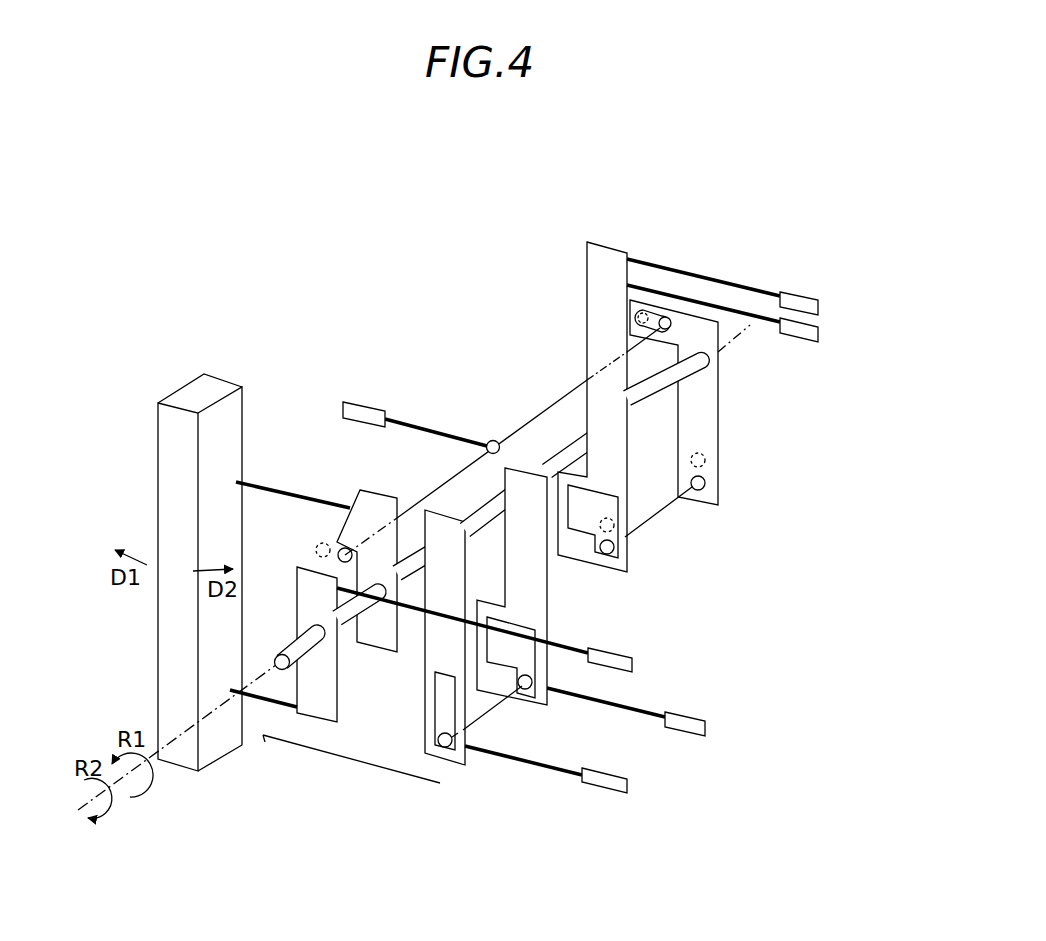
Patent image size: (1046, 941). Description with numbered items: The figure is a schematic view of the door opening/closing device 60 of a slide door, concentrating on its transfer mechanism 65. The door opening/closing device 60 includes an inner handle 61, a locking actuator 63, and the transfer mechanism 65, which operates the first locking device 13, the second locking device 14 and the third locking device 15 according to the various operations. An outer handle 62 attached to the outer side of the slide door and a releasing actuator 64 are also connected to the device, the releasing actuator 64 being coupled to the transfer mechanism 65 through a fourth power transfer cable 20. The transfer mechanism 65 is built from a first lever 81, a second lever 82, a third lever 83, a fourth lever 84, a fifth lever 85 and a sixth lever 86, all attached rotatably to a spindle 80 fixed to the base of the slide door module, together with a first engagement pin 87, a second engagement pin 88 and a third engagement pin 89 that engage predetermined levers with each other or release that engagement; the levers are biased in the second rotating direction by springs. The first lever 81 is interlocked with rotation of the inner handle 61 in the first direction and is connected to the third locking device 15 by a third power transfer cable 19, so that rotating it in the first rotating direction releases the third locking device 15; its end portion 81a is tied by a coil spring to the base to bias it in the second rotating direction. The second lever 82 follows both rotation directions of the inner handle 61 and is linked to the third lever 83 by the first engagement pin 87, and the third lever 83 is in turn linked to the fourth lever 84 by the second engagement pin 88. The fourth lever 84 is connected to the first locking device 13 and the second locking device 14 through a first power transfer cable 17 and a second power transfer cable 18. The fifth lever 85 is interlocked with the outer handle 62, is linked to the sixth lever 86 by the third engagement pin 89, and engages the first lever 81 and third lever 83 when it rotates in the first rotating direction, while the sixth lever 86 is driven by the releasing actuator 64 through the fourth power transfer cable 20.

The first locking device 13 is at (820, 302).
The second locking device 14 is at (820, 330).
The third locking device 15 is at (635, 661).
The first power transfer cable 17 is at (747, 289).
The second power transfer cable 18 is at (757, 324).
The third power transfer cable 19 is at (567, 645).
The fourth power transfer cable 20 is at (542, 769).
The door opening/closing device 60 is at (345, 322).
The inner handle 61 is at (158, 432).
The outer handle 62 is at (707, 726).
The locking actuator 63 is at (343, 410).
The releasing actuator 64 is at (628, 786).
The transfer mechanism 65 is at (349, 757).
The spindle 80 is at (285, 645).
The first lever 81 is at (338, 708).
The end portion 81a is at (303, 565).
The second lever 82 is at (370, 647).
The third lever 83 is at (717, 487).
The fourth lever 84 is at (625, 549).
The fifth lever 85 is at (547, 584).
The sixth lever 86 is at (467, 741).
The first engagement pin 87 is at (540, 419).
The second engagement pin 88 is at (660, 514).
The third engagement pin 89 is at (492, 713).